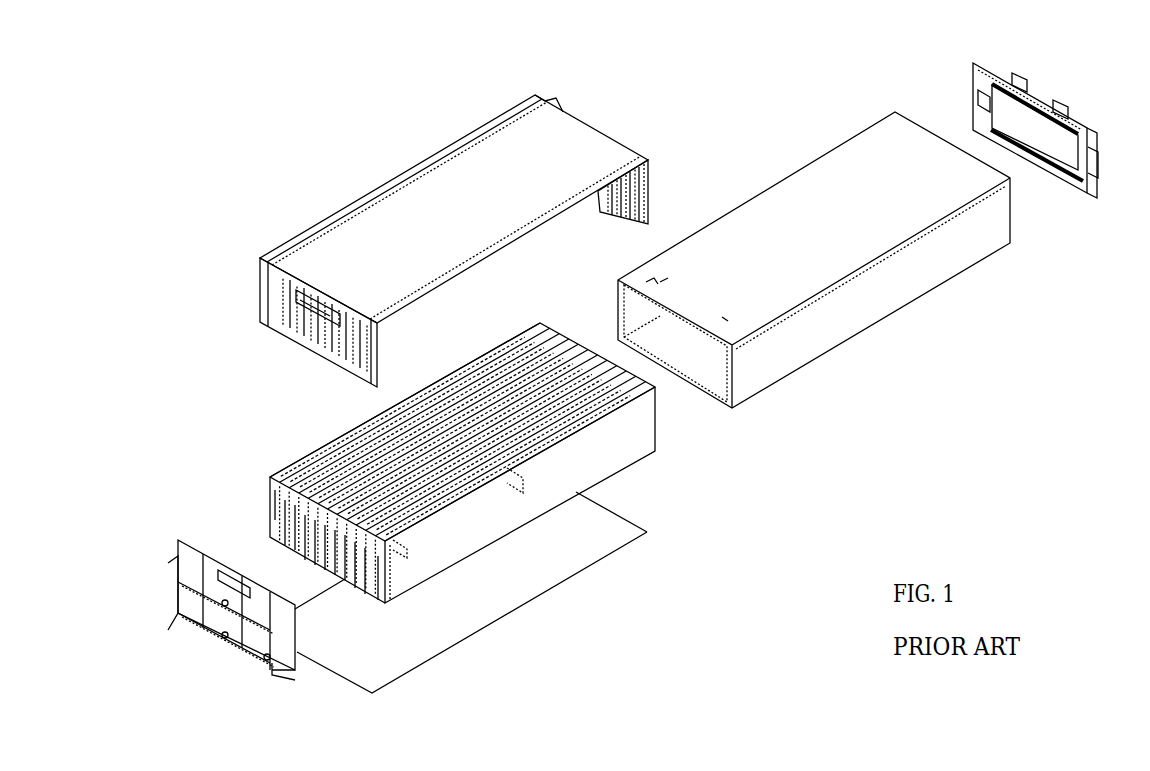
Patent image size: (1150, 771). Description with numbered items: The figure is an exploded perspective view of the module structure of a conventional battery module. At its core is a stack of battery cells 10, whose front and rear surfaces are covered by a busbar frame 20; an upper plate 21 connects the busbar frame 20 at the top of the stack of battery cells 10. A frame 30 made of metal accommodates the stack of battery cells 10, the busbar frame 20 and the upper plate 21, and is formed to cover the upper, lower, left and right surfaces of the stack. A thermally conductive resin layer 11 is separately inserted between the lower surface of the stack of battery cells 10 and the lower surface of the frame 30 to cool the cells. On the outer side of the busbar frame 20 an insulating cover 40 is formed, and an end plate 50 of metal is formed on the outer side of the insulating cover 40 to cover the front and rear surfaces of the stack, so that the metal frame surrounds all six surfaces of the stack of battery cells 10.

The stack of battery cells 10 is at (318, 468).
The thermally conductive resin layer 11 is at (520, 582).
The busbar frame 20 is at (260, 297).
The upper plate 21 is at (428, 190).
The frame 30 is at (863, 312).
The insulating cover 40 is at (1047, 150).
The end plate 50 is at (1068, 98).